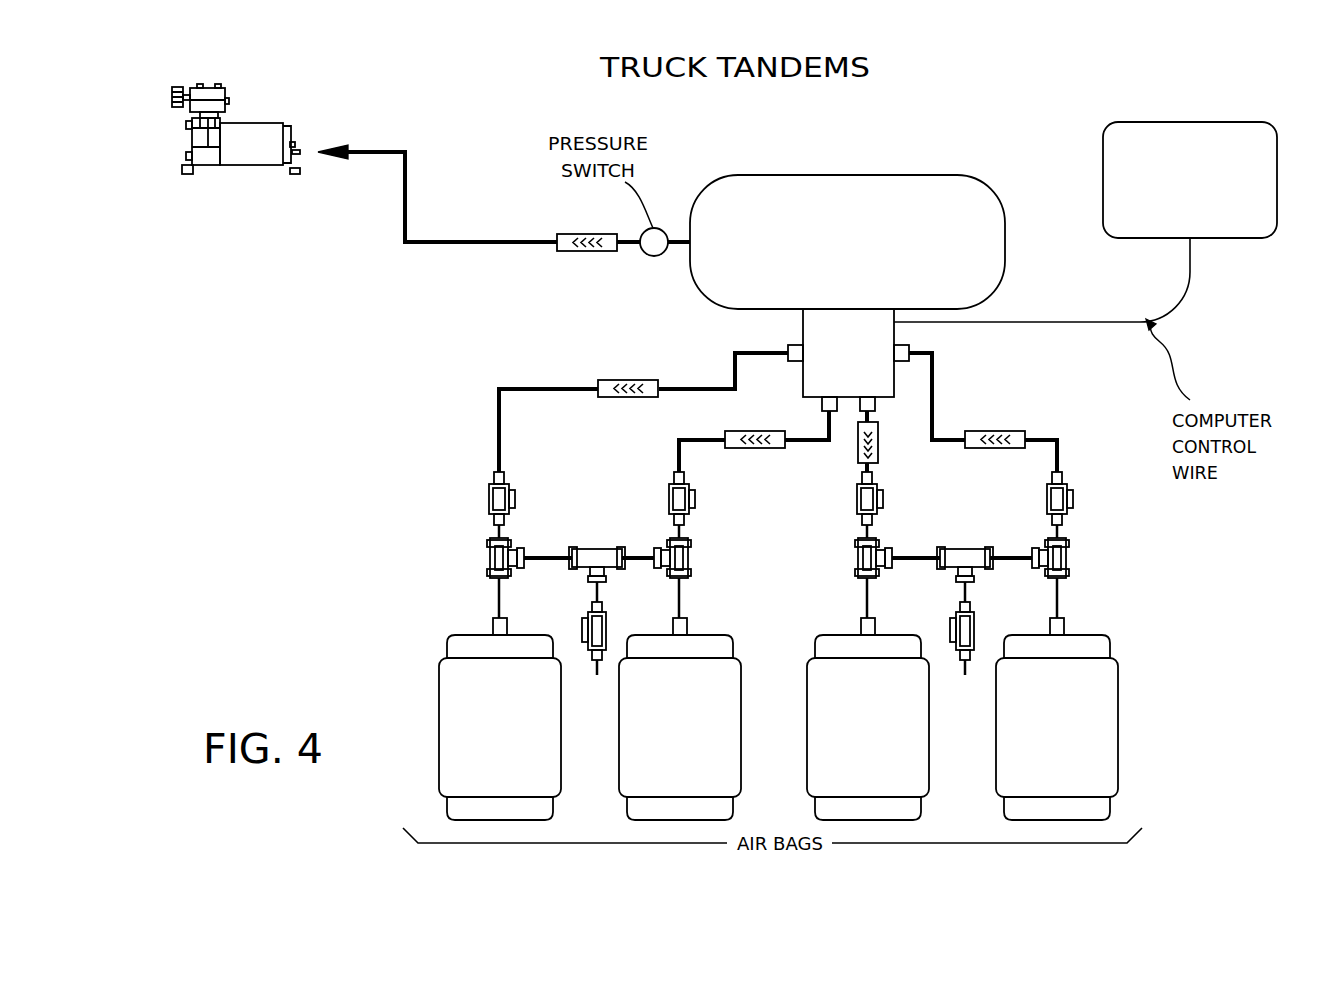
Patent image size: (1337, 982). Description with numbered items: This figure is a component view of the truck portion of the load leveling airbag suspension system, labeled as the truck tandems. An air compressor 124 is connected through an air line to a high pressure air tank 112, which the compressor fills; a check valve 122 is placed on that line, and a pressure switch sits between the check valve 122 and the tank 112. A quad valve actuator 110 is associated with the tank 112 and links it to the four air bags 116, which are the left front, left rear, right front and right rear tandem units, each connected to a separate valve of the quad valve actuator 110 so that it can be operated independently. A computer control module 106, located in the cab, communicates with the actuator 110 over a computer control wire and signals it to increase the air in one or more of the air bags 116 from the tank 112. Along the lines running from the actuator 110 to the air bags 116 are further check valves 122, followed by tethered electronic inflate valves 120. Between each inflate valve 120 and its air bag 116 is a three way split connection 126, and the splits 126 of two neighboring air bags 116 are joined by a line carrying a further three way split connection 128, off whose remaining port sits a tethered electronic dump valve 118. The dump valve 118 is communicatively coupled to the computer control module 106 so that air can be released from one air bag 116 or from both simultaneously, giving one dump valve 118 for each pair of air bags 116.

The computer control module 106 is at (1190, 122).
The quad valve actuator 110 is at (882, 333).
The high pressure air tank 112 is at (886, 190).
The air bag 116 is at (484, 788).
The electronic dump valve 118 is at (962, 667).
The electronic inflate valve 120 is at (1140, 556).
The check valve 122 is at (600, 252).
The air compressor 124 is at (243, 153).
The three way split connection 126 is at (509, 548).
The three way split connection 128 is at (597, 549).